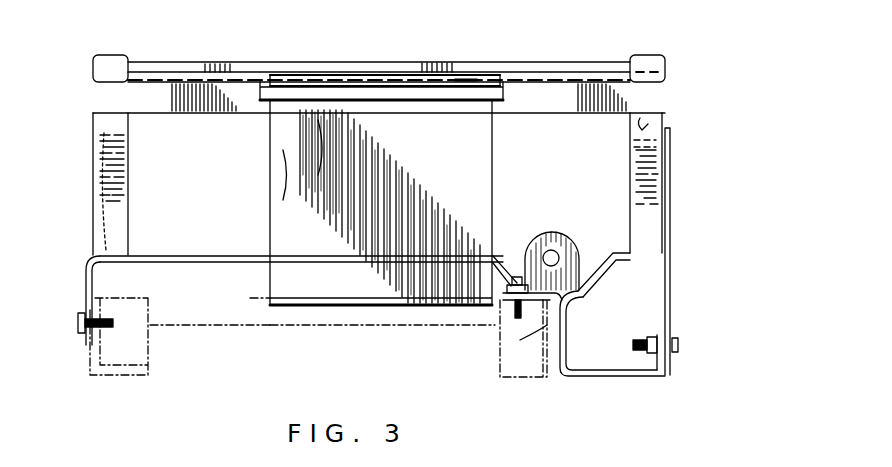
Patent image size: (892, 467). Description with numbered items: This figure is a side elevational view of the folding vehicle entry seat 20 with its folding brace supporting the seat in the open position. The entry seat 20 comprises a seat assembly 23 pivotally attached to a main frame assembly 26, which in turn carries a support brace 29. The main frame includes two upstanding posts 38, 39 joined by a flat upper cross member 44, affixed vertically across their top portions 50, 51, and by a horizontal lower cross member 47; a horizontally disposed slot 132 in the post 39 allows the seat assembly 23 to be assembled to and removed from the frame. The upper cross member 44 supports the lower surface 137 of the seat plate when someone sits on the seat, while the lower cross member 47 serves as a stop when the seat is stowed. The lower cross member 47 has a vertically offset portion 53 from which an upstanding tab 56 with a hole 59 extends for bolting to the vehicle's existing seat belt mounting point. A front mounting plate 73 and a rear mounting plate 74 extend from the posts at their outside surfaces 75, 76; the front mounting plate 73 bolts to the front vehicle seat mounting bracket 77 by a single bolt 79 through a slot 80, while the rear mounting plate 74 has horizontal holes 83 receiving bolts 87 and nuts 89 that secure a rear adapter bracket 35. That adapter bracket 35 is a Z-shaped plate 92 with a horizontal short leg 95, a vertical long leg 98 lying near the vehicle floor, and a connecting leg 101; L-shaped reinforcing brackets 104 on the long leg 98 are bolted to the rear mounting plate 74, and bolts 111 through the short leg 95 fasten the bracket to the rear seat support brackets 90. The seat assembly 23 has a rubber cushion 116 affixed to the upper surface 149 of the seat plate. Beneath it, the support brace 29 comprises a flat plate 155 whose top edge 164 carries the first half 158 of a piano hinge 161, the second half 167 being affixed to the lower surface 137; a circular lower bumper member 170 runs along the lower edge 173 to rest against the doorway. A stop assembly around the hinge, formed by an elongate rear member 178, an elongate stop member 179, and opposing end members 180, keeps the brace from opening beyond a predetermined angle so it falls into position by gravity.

The entry seat 20 is at (66, 30).
The seat assembly 23 is at (568, 30).
The main frame assembly 26 is at (700, 202).
The support brace 29 is at (250, 198).
The rear adapter bracket 35 is at (560, 392).
The post 38 is at (101, 180).
The post 39 is at (630, 160).
The upper cross member 44 is at (105, 101).
The lower cross member 47 is at (240, 263).
The top portion 50 is at (93, 65).
The top portion 51 is at (667, 63).
The lower vertically offset portion 53 is at (593, 270).
The upstanding tab 56 is at (538, 242).
The hole 59 is at (560, 243).
The front mounting plate 73 is at (86, 265).
The rear mounting plate 74 is at (670, 292).
The outside surface 75 is at (108, 230).
The outside surface 76 is at (645, 122).
The front vehicle seat mounting bracket 77 is at (117, 378).
The bolt 79 is at (80, 330).
The slot 80 is at (80, 318).
The holes 83 is at (670, 340).
The bolt 87 is at (680, 345).
The nut 89 is at (655, 350).
The rear seat support bracket 90 is at (530, 380).
The Z-shaped plate 92 is at (655, 392).
The short leg 95 is at (567, 318).
The long leg 98 is at (610, 378).
The connecting leg 101 is at (540, 340).
The L-shaped reinforcing bracket 104 is at (662, 330).
The bolt 111 is at (503, 322).
The rubber cushion 116 is at (372, 64).
The horizontally disposed slot 132 is at (655, 143).
The lower surface 137 is at (214, 80).
The upper surface 149 is at (252, 76).
The flat plate 155 is at (290, 222).
The first half 158 is at (333, 80).
The piano hinge 161 is at (482, 76).
The top edge 164 is at (460, 115).
The second half 167 is at (428, 88).
The lower bumper member 170 is at (360, 310).
The lower edge 173 is at (358, 297).
The elongate rear member 178 is at (317, 152).
The elongate stop member 179 is at (282, 142).
The end members 180 is at (258, 96).